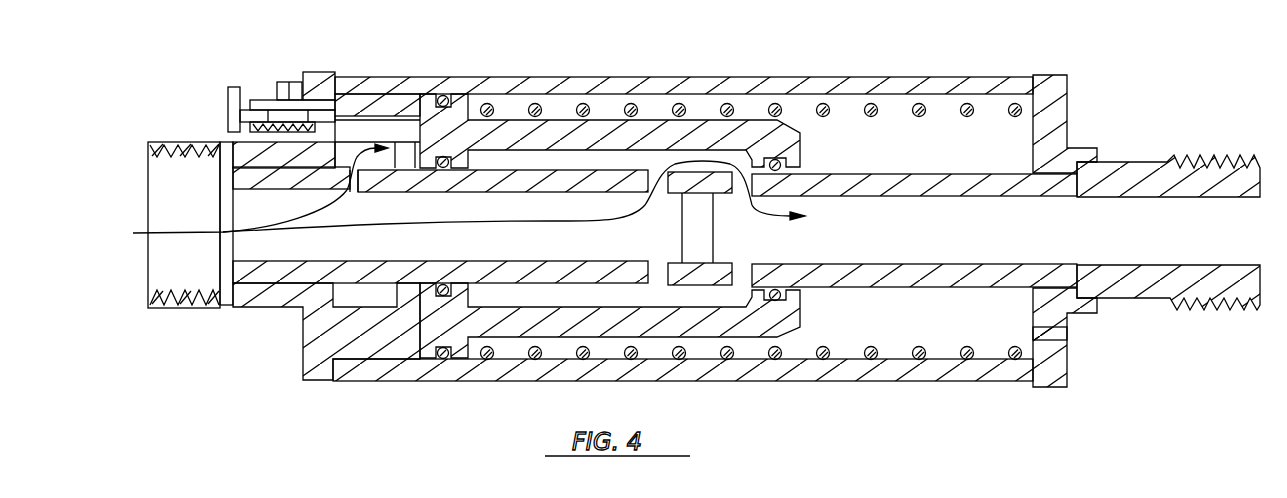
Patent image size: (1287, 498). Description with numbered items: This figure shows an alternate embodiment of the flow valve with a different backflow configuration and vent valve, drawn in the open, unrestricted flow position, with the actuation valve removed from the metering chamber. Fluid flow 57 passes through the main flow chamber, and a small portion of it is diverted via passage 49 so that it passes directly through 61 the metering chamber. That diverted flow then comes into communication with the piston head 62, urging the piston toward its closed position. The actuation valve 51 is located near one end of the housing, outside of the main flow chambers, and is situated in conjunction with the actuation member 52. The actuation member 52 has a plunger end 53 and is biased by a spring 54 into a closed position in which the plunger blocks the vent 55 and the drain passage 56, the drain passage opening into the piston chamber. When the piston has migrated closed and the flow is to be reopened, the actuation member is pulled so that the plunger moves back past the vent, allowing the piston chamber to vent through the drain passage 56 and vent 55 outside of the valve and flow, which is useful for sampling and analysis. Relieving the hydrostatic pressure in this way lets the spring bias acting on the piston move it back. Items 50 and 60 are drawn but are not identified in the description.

The passage 49 is at (373, 170).
The housing body 50 is at (308, 340).
The actuation valve 51 is at (268, 98).
The actuation member 52 is at (226, 108).
The plunger end 53 is at (338, 112).
The spring 54 is at (248, 134).
The vent 55 is at (289, 80).
The drain passage 56 is at (420, 92).
The flow 57 is at (453, 203).
The inner tube 60 is at (597, 228).
The flow through metering chamber 61 is at (376, 166).
The piston head 62 is at (428, 127).